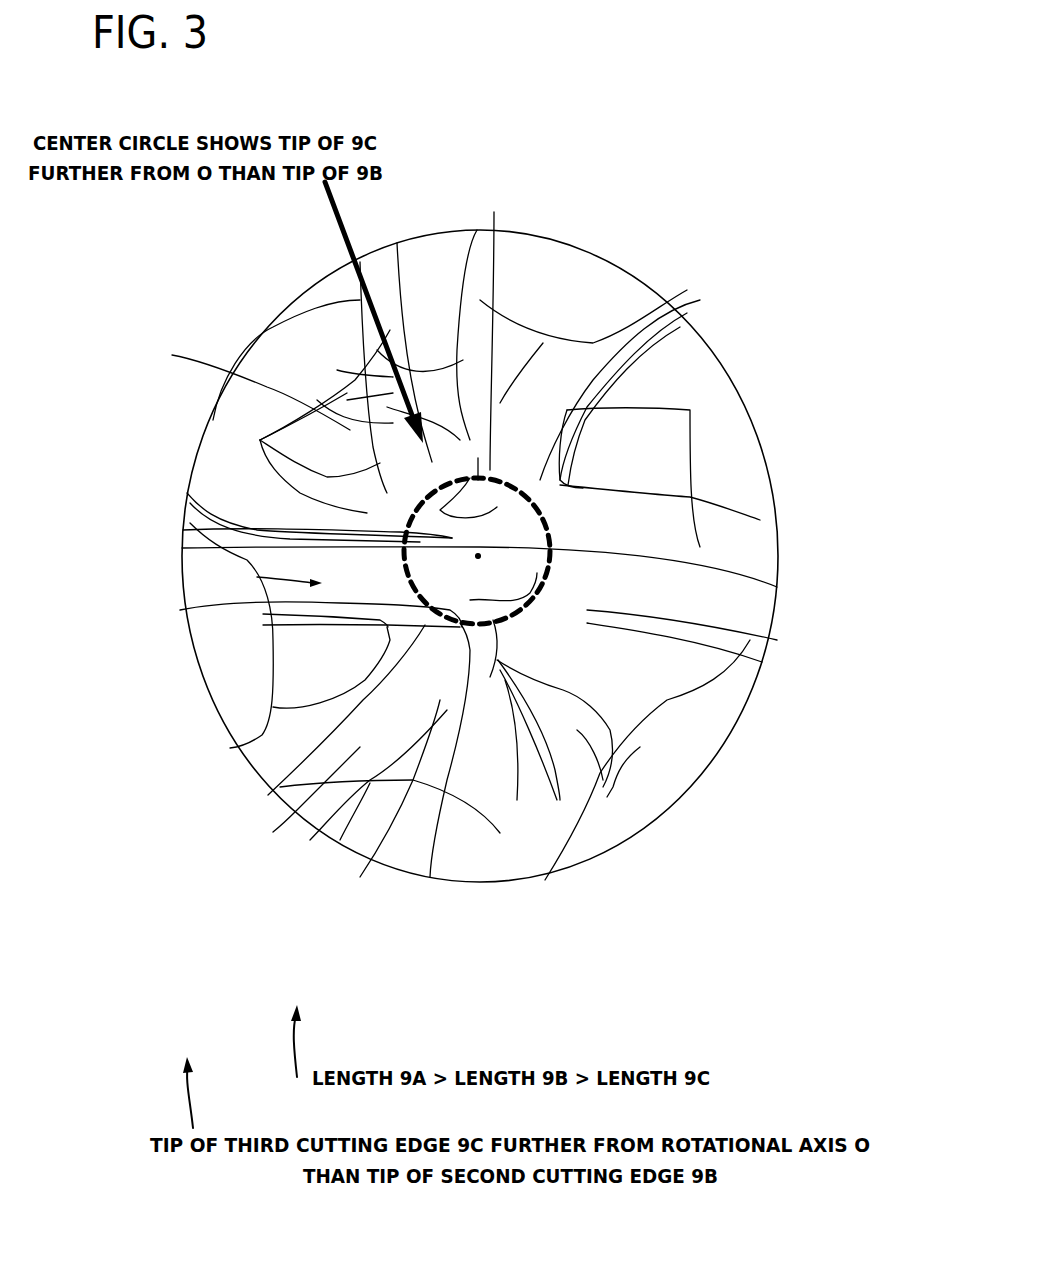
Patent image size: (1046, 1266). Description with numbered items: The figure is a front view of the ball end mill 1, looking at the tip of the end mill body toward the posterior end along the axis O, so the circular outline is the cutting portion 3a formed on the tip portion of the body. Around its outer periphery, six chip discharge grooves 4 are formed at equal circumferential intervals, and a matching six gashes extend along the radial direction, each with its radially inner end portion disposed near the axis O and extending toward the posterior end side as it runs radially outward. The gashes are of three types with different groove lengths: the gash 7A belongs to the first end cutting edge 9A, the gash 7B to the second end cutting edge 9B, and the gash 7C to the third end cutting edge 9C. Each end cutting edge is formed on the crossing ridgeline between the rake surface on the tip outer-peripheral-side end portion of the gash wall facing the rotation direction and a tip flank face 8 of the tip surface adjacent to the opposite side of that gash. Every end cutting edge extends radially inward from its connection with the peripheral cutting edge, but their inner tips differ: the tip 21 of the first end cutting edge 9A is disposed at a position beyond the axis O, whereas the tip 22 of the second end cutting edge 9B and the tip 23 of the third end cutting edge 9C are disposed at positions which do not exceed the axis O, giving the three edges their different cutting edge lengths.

The ball end mill 1 is at (752, 152).
The cutting portion 3a is at (587, 152).
The chip discharge groove 4 is at (560, 257).
The gash of the first end cutting edge 7A is at (543, 567).
The gash of the second end cutting edge 7B is at (445, 490).
The gash of the third end cutting edge 7C is at (375, 461).
The tip flank face 8 is at (385, 435).
The first end cutting edge 9A is at (190, 612).
The second end cutting edge 9B is at (500, 480).
The third end cutting edge 9C is at (410, 460).
The tip of the first end cutting edge 21 is at (300, 514).
The tip of the second end cutting edge 22 is at (494, 300).
The tip of the third end cutting edge 23 is at (267, 387).
The axis O is at (700, 300).